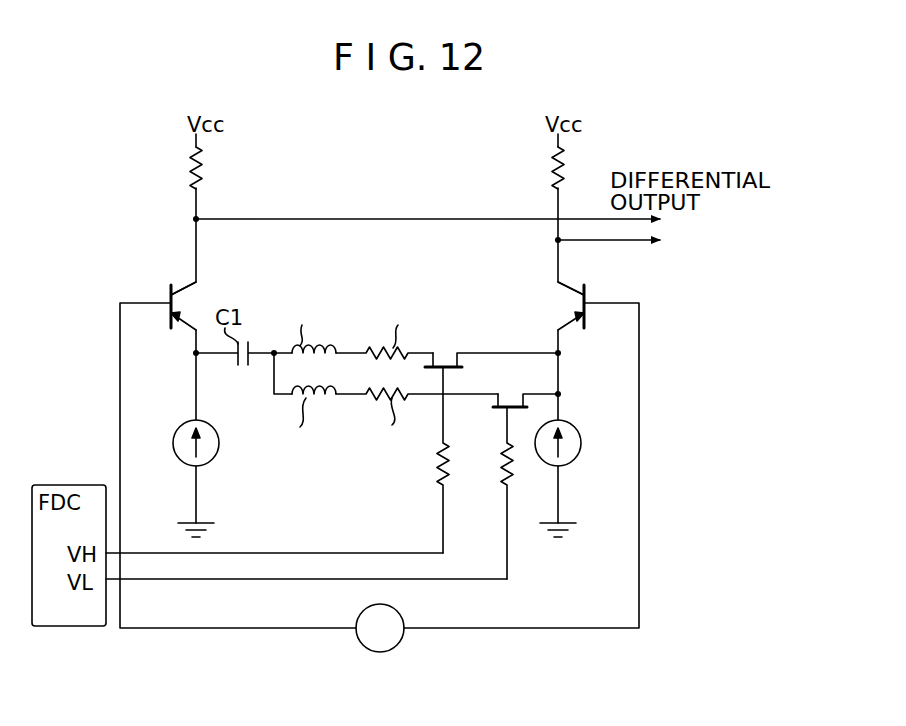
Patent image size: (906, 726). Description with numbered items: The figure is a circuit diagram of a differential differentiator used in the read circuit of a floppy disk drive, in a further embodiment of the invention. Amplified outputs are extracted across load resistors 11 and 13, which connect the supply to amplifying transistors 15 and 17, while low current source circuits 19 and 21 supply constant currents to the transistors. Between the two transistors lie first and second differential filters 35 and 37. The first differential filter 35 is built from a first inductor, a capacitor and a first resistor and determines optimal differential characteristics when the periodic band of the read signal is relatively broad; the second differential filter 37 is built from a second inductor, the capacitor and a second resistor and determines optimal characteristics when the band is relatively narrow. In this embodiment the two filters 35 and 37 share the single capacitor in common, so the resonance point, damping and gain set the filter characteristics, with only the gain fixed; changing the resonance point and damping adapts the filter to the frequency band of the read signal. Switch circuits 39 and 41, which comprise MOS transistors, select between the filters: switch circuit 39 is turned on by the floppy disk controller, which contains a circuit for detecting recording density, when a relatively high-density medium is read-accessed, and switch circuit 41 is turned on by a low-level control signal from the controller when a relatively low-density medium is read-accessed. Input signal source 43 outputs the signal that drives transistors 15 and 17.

The load resistor 11 is at (204, 166).
The load resistor 13 is at (549, 170).
The amplifying transistor 15 is at (190, 302).
The amplifying transistor 17 is at (565, 307).
The low current source circuit 19 is at (213, 462).
The low current source circuit 21 is at (575, 462).
The first differential filter 35 is at (352, 352).
The second differential filter 37 is at (348, 396).
The switch circuit 39 is at (447, 360).
The switch circuit 41 is at (500, 412).
The input signal source 43 is at (398, 612).